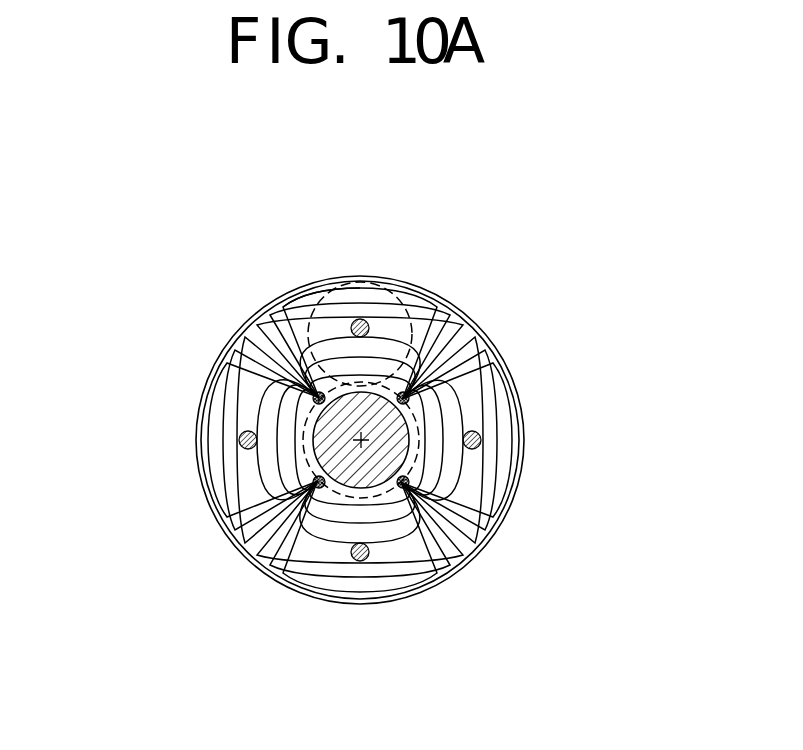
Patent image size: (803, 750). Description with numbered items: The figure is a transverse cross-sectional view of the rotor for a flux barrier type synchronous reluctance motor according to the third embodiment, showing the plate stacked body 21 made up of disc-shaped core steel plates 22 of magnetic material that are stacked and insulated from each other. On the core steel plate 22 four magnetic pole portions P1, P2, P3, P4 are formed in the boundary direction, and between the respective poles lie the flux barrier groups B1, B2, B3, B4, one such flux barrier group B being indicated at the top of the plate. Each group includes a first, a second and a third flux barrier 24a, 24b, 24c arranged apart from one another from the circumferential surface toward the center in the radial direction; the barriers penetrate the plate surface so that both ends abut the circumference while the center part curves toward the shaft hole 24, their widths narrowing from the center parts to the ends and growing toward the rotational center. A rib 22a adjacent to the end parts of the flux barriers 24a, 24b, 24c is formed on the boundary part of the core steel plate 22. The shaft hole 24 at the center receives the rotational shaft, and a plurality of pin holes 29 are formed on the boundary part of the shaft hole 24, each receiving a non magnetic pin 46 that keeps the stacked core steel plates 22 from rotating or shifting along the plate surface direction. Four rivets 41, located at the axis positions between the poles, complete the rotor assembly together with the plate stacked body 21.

The plate stacked body 21 is at (235, 292).
The core steel plate 22 is at (272, 318).
The rib 22a is at (295, 292).
The shaft hole 24 is at (352, 462).
The first flux barrier 24a is at (220, 402).
The second flux barrier 24b is at (228, 360).
The third flux barrier 24c is at (240, 334).
The pin hole 29 is at (319, 398).
The rivet 41 is at (482, 448).
The non magnetic pin 46 is at (408, 480).
The flux barrier group B is at (396, 288).
The first flux barrier group B1 is at (360, 278).
The second flux barrier group B2 is at (190, 445).
The third flux barrier group B3 is at (363, 607).
The fourth flux barrier group B4 is at (530, 442).
The first magnetic pole portion P1 is at (478, 322).
The second magnetic pole portion P2 is at (247, 332).
The third magnetic pole portion P3 is at (245, 553).
The fourth magnetic pole portion P4 is at (478, 555).